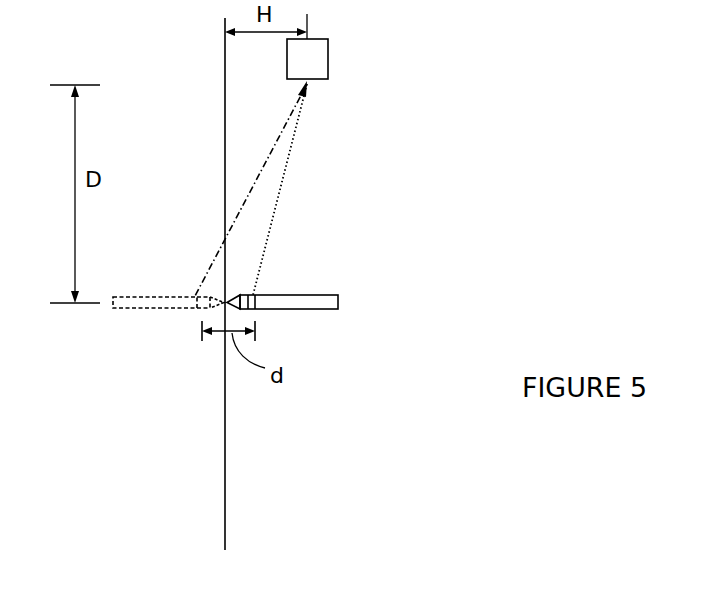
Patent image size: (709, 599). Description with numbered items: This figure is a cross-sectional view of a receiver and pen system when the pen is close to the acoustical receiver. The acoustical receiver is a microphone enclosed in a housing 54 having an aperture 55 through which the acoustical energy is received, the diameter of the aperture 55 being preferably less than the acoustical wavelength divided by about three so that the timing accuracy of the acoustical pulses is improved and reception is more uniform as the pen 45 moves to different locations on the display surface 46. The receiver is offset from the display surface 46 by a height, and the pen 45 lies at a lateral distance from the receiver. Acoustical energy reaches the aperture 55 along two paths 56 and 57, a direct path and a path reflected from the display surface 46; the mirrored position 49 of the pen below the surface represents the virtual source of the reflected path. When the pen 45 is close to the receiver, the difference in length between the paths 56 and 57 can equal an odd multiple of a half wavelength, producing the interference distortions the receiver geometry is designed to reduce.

The pen 45 is at (338, 302).
The display surface 46 is at (226, 478).
The virtual/mirrored object position (dashed) 49 is at (146, 300).
The housing 54 is at (328, 57).
The aperture 55 is at (300, 95).
The path 56 is at (287, 163).
The path 57 is at (264, 169).